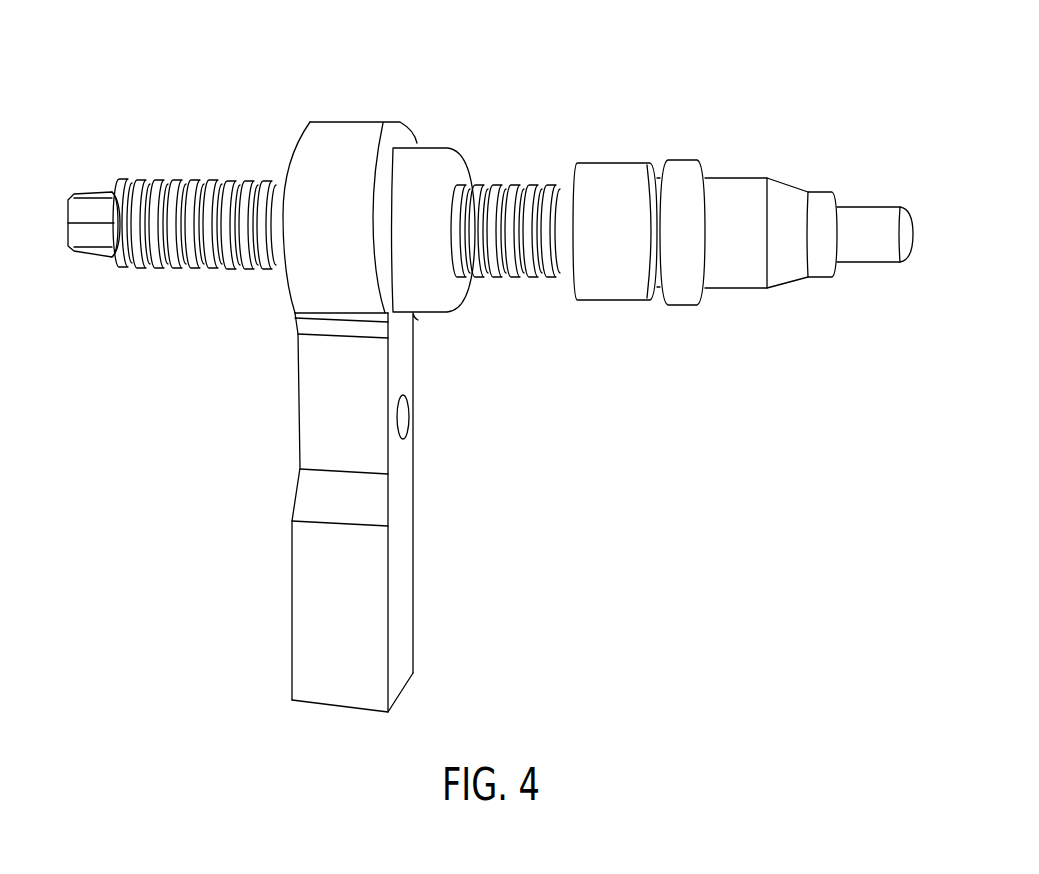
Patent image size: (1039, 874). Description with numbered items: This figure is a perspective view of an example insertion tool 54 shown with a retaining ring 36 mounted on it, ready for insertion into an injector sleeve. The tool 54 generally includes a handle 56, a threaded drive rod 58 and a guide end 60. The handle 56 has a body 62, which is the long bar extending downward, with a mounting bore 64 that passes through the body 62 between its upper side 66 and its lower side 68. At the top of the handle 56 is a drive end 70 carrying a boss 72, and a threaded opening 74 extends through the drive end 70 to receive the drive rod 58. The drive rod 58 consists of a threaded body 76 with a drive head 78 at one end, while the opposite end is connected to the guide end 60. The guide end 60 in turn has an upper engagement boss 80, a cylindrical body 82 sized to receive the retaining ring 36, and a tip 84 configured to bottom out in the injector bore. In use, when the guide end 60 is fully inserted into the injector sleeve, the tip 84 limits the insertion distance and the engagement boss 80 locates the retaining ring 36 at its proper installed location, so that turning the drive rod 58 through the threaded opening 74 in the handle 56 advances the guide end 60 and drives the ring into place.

The insertion tool 54 is at (962, 148).
The threaded drive rod 58 is at (189, 170).
The drive head 78 is at (105, 188).
The threaded body 76 is at (225, 180).
The drive end 70 is at (345, 121).
The boss 72 is at (440, 147).
The threaded opening 74 is at (465, 184).
The guide end 60 is at (733, 322).
The upper engagement boss 80 is at (625, 163).
The retaining ring 36 is at (698, 150).
The cylindrical body 82 is at (745, 180).
The tip 84 is at (878, 205).
The handle 56 is at (425, 590).
The body 62 is at (430, 513).
The upper side 66 is at (312, 444).
The mounting bore 64 is at (405, 418).
The lower side 68 is at (412, 655).